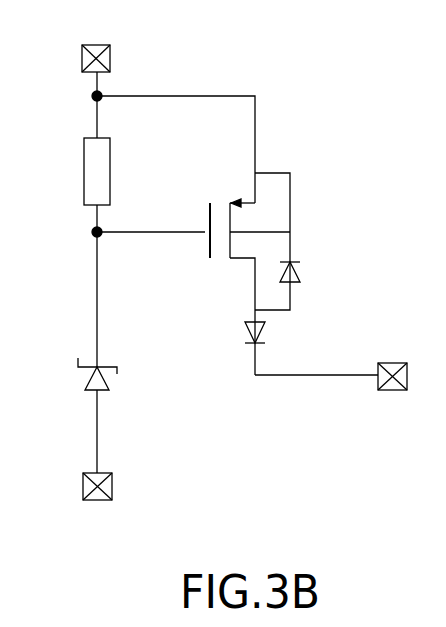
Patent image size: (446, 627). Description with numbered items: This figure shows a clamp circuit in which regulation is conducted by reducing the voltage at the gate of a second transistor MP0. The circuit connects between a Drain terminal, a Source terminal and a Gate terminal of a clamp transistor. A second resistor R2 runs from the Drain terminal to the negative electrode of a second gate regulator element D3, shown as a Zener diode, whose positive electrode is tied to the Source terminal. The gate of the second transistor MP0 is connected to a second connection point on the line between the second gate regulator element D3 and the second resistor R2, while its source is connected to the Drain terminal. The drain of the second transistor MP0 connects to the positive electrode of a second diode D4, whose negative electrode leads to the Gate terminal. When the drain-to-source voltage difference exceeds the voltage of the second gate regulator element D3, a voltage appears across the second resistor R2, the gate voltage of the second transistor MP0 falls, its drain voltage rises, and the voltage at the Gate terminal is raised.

The drain terminal Drain is at (96, 44).
The second resistor R2 is at (76, 171).
The second transistor MP0 is at (245, 247).
The second diode D4 is at (277, 342).
The gate terminal Gate is at (399, 392).
The second gate regulator element D3 is at (73, 378).
The source terminal Source is at (115, 502).